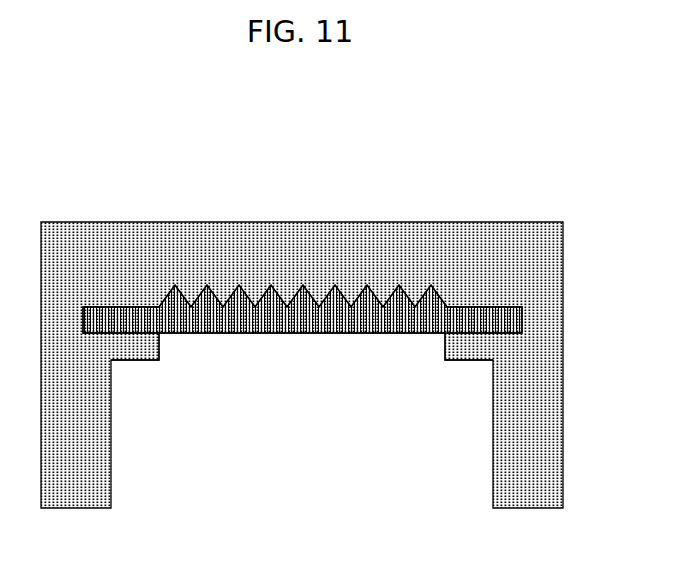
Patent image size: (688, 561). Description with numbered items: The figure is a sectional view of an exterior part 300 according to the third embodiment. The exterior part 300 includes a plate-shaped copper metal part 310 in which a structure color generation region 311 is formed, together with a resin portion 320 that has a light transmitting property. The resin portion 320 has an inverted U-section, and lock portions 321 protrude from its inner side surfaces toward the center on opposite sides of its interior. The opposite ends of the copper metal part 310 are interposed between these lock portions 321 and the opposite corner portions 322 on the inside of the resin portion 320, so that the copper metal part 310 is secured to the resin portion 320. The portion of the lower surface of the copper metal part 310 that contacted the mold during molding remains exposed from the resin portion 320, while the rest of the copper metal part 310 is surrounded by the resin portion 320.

The exterior part 300 is at (327, 298).
The resin portion 320 is at (408, 240).
The lock portions 321 is at (143, 362).
The corner portions 322 is at (98, 297).
The copper metal part 310 is at (270, 310).
The structure color generation region 311 is at (302, 285).